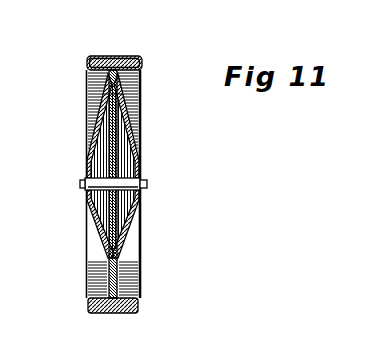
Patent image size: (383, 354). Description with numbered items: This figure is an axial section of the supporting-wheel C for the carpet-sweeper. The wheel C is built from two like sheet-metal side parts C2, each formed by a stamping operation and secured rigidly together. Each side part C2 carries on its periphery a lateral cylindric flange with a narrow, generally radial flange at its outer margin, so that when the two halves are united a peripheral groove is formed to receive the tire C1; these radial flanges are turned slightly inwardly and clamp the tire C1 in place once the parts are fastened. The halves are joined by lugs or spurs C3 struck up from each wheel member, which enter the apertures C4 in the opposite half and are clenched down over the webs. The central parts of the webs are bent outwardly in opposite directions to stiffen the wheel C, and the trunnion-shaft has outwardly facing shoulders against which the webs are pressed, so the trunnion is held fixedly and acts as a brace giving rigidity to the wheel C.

The tire C1 is at (133, 56).
The side part of wheel C2 is at (133, 146).
The lug or spur C3 is at (108, 274).
The aperture C4 is at (142, 98).
The wheel C is at (80, 185).